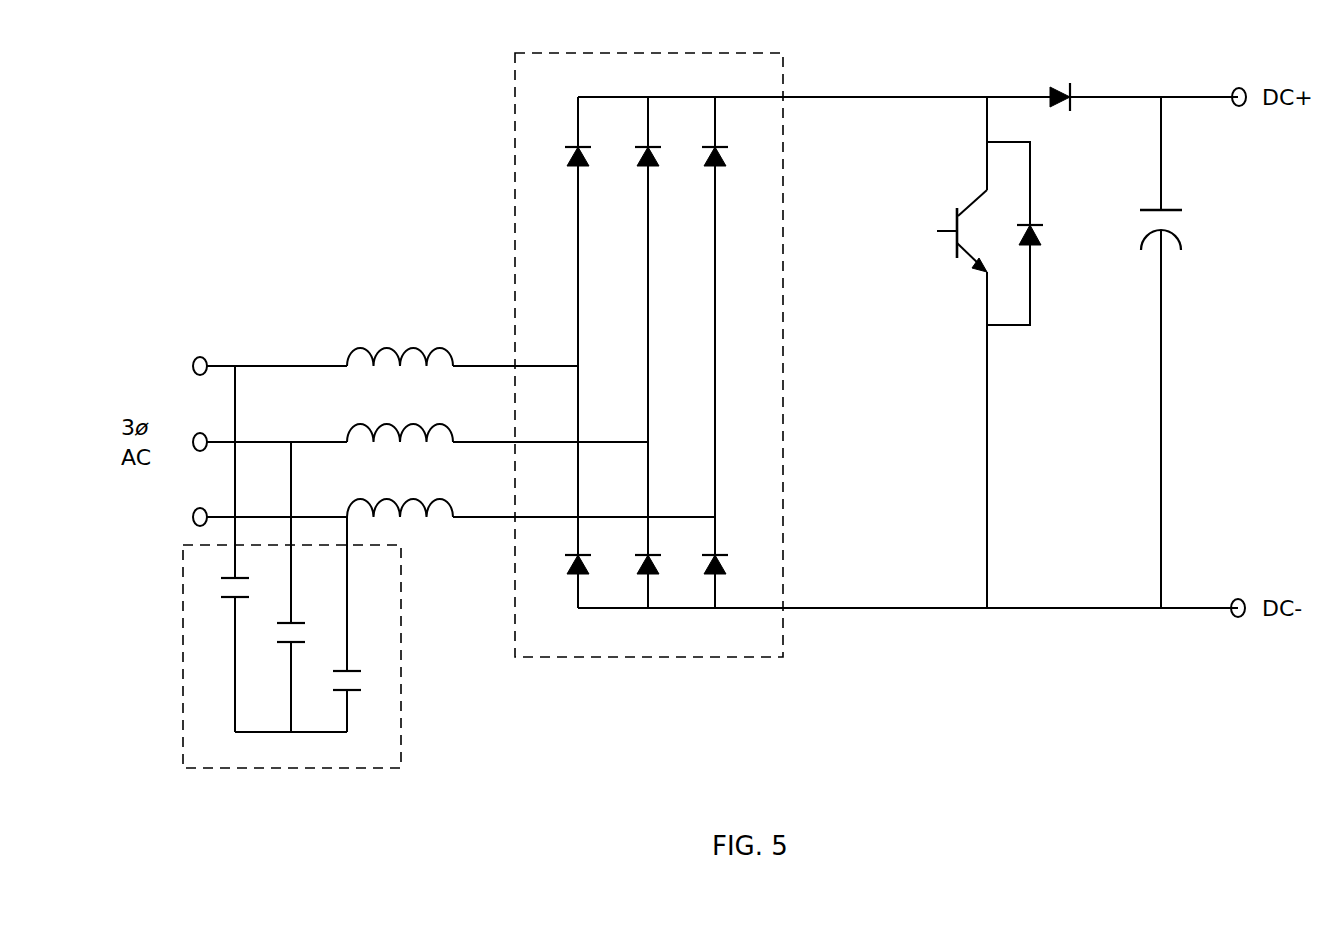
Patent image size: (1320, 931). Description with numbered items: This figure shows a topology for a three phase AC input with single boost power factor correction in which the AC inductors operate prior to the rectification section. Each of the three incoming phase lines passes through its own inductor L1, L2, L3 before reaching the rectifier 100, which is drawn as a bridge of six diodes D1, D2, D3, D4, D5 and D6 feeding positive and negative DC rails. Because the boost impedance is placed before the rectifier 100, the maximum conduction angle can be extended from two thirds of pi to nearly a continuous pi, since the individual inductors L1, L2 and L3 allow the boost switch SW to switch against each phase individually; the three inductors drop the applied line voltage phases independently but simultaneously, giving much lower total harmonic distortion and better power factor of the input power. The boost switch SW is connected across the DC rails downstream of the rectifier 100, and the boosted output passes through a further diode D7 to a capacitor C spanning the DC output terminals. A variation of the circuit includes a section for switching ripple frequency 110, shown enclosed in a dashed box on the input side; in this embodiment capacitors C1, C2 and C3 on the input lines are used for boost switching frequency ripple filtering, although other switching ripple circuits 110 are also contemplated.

The rectifier 100 is at (751, 377).
The section for switching ripple frequency 110 is at (292, 676).
The inductor L1 is at (462, 341).
The inductor L2 is at (497, 417).
The inductor L3 is at (531, 492).
The capacitor C1 is at (222, 655).
The capacitor C2 is at (277, 677).
The capacitor C3 is at (357, 701).
The rectifier diode D1 is at (595, 170).
The rectifier diode D2 is at (664, 170).
The rectifier diode D3 is at (732, 170).
The rectifier diode D4 is at (595, 578).
The rectifier diode D5 is at (664, 578).
The rectifier diode D6 is at (732, 578).
The boost diode D7 is at (1112, 81).
The boost switch SW is at (990, 352).
The DC link capacitor C is at (1174, 352).